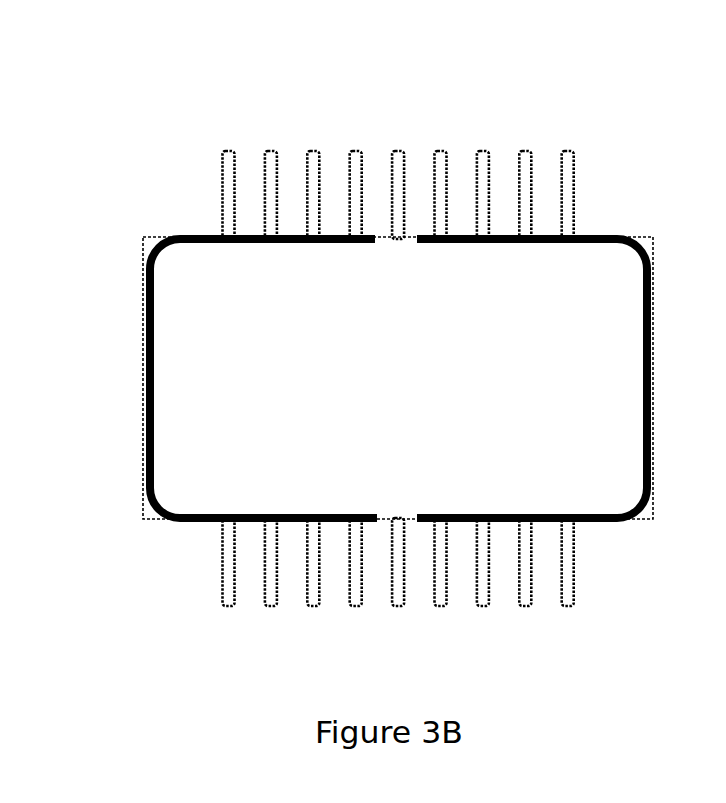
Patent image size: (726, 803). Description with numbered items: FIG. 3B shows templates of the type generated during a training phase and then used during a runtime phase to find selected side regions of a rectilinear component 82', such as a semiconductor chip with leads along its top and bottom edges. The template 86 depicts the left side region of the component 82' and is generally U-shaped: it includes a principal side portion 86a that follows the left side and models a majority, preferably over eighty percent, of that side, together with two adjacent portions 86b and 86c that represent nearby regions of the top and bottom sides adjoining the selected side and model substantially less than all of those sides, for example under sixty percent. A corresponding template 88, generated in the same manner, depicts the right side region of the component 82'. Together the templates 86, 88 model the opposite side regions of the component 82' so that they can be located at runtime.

The template 86 is at (344, 282).
The principal side portion 86a is at (153, 365).
The adjacent side portion 86b is at (295, 242).
The adjacent side portion 86c is at (340, 513).
The template 88 is at (630, 197).
The component 82' is at (420, 391).